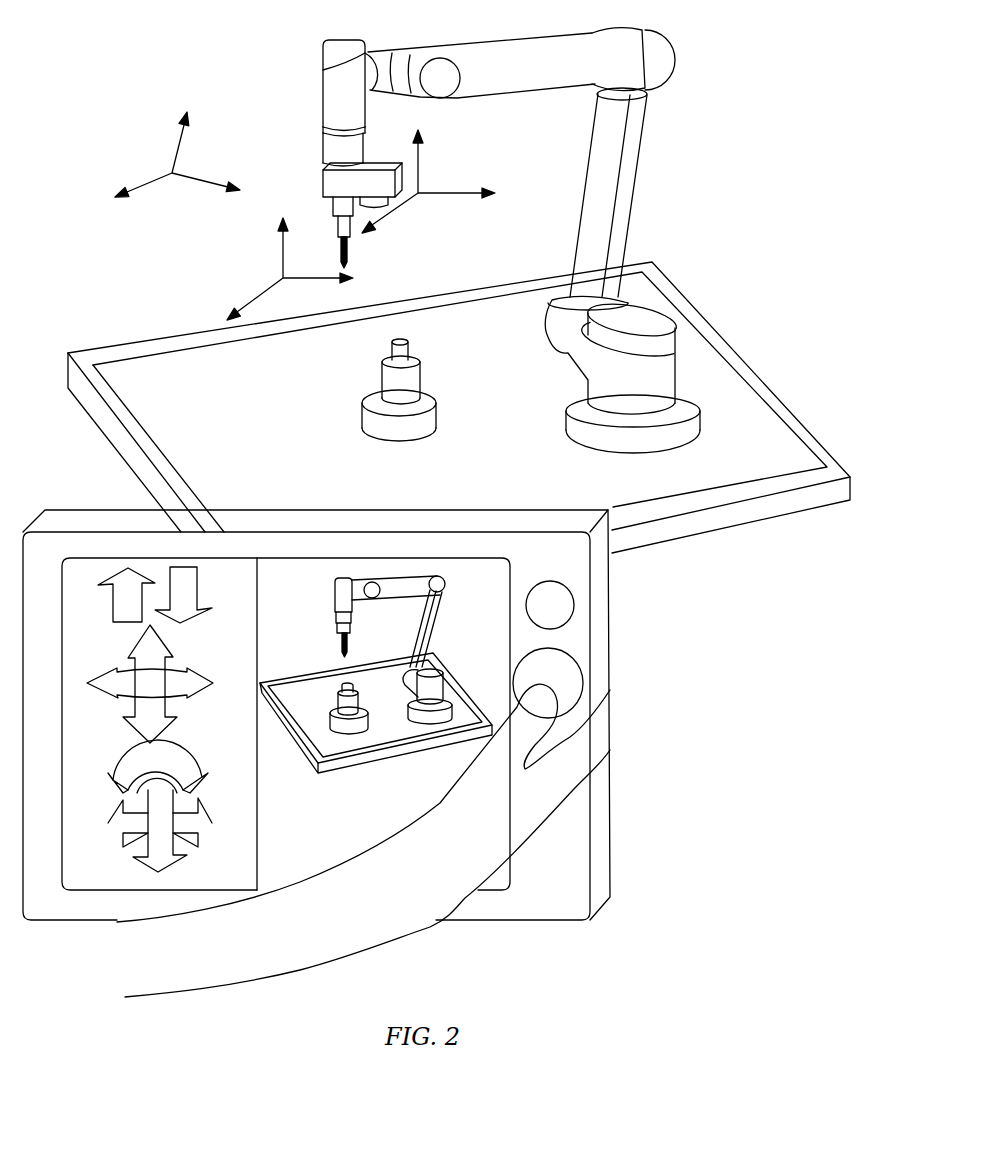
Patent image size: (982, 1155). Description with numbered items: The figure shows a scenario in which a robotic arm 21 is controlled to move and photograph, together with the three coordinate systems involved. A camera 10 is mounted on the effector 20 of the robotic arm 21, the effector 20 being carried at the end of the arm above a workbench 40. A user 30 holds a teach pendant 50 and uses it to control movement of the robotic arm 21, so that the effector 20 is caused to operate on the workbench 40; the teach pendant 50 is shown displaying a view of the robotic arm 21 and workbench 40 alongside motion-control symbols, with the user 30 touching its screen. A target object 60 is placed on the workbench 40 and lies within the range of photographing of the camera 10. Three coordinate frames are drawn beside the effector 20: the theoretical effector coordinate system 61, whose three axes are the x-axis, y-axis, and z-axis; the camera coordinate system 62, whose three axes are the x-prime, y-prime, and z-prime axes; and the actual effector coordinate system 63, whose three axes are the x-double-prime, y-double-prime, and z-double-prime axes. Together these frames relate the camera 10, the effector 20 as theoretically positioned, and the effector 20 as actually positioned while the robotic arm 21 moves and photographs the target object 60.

The camera 10 is at (368, 192).
The effector 20 is at (348, 258).
The robotic arm 21 is at (637, 134).
The user 30 is at (598, 747).
The workbench 40 is at (673, 298).
The teach pendant 50 is at (612, 568).
The target object 60 is at (423, 400).
The theoretical effector coordinate system 61 is at (238, 248).
The camera coordinate system 62 is at (450, 137).
The actual effector coordinate system 63 is at (138, 146).